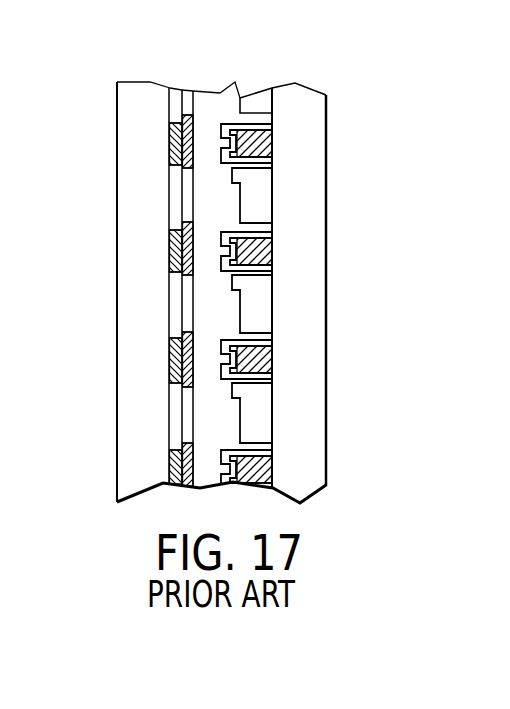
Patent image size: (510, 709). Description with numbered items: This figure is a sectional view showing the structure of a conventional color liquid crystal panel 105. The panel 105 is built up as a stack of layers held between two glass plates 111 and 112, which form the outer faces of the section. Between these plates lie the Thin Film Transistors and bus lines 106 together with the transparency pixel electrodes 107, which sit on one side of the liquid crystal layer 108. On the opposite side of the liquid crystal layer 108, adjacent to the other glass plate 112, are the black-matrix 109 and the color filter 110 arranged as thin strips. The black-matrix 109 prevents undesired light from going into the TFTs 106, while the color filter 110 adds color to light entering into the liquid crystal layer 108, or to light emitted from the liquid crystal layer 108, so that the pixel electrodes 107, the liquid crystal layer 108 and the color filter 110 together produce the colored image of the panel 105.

The color liquid crystal panel 105 is at (271, 85).
The thin film transistors and bus lines 106 is at (265, 142).
The transparency pixel electrodes 107 is at (263, 198).
The liquid crystal layer 108 is at (215, 312).
The black-matrix 109 is at (188, 93).
The color filter 110 is at (178, 96).
The glass plate 111 is at (320, 163).
The glass plate 112 is at (135, 172).